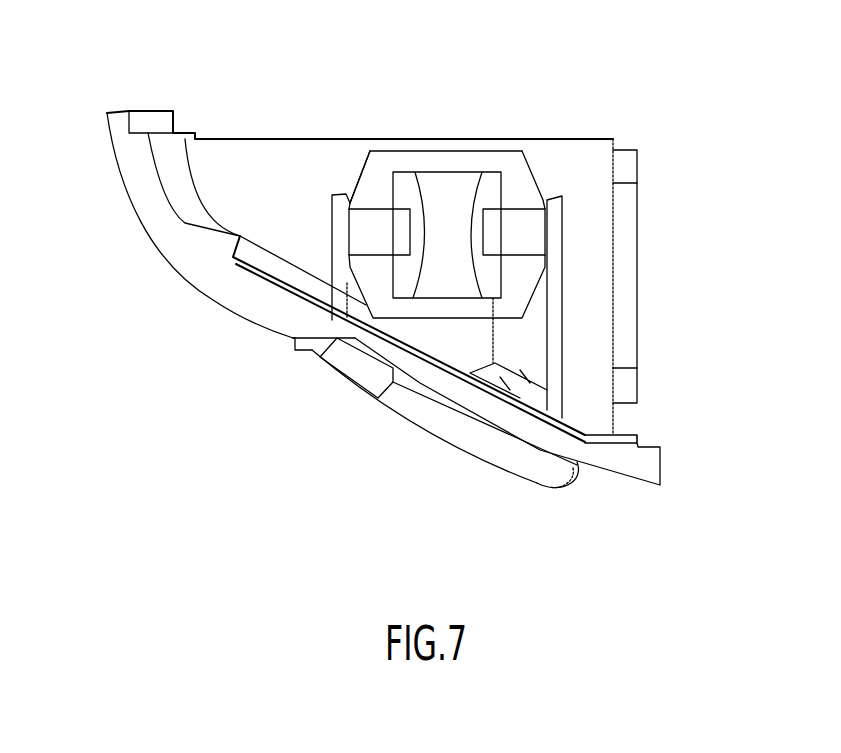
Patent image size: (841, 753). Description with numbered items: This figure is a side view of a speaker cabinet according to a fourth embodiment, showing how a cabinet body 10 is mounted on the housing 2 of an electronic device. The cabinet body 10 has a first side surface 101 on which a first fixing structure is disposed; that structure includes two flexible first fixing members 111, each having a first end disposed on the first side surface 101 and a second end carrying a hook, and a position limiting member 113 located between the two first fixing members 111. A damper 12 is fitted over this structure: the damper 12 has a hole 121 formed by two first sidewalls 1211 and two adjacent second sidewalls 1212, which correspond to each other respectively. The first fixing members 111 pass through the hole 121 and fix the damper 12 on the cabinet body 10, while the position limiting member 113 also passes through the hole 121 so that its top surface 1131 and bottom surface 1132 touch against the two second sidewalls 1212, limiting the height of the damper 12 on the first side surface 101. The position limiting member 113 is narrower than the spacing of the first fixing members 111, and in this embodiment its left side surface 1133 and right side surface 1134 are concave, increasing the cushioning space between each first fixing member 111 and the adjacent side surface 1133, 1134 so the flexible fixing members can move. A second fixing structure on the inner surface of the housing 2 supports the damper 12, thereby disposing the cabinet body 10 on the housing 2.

The housing 2 is at (228, 302).
The cabinet body 10 is at (565, 139).
The first side surface 101 is at (597, 177).
The first fixing member 111 is at (528, 155).
The position limiting member 113 is at (475, 270).
The top surface 1131 is at (415, 182).
The bottom surface 1132 is at (347, 300).
The left side surface 1133 is at (420, 193).
The right side surface 1134 is at (473, 261).
The damper 12 is at (440, 151).
The hole 121 is at (490, 285).
The first sidewall 1211 is at (512, 205).
The second sidewall 1212 is at (415, 178).